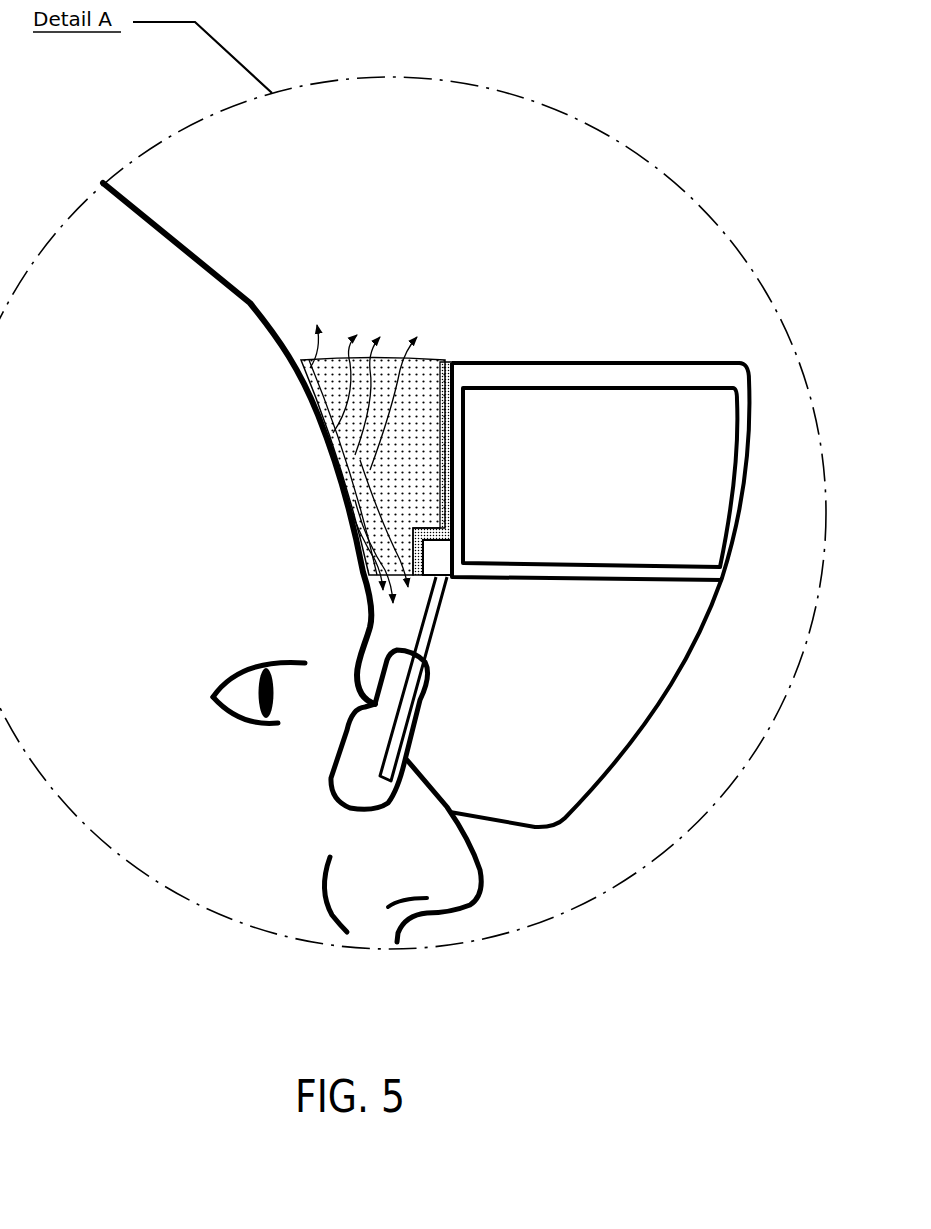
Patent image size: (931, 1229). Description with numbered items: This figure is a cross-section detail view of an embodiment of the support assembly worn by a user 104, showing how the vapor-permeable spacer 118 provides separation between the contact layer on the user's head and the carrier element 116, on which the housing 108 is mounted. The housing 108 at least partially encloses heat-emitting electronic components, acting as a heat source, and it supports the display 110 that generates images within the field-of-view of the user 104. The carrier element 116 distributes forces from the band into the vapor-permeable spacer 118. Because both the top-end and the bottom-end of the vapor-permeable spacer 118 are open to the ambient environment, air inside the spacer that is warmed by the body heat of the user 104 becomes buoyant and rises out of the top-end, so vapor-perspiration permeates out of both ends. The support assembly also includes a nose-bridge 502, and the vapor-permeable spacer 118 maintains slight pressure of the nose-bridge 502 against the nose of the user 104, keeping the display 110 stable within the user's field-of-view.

The user 104 is at (507, 900).
The housing 108 is at (750, 392).
The display 110 is at (430, 635).
The carrier element 116 is at (446, 360).
The vapor-permeable spacer 118 is at (365, 482).
The nose-bridge 502 is at (330, 778).